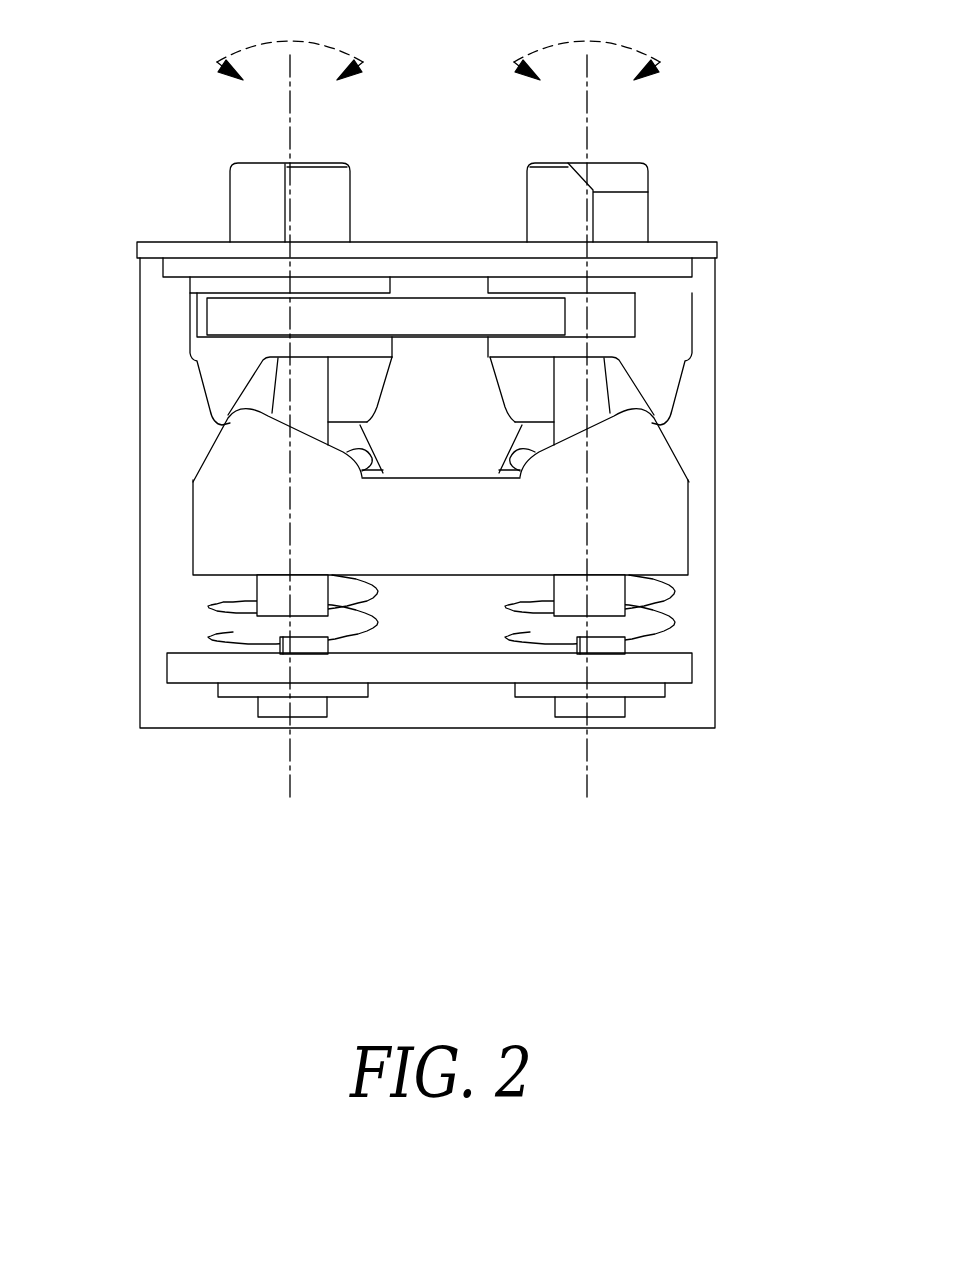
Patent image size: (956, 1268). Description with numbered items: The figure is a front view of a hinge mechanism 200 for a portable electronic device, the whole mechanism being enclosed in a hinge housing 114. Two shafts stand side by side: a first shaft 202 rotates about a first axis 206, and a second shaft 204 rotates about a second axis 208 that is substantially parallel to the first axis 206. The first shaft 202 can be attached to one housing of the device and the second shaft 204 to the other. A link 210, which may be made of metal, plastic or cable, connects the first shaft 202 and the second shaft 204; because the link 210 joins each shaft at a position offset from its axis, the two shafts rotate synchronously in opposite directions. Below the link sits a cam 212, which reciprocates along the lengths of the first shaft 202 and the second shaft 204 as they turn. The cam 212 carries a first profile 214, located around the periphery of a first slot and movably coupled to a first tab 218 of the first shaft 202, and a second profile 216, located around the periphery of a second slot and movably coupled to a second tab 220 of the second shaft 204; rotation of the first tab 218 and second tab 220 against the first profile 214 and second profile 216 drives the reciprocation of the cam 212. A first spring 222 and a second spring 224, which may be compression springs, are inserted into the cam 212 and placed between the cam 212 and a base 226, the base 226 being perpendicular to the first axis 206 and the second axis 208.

The hinge housing 114 is at (717, 508).
The hinge mechanism 200 is at (665, 892).
The first shaft 202 is at (247, 208).
The second shaft 204 is at (637, 216).
The first axis 206 is at (289, 128).
The second axis 208 is at (588, 128).
The link 210 is at (426, 310).
The cam 212 is at (223, 523).
The first profile 214 is at (208, 451).
The second profile 216 is at (674, 450).
The first tab 218 is at (217, 390).
The second tab 220 is at (645, 388).
The first spring 222 is at (212, 614).
The second spring 224 is at (648, 623).
The base 226 is at (648, 668).